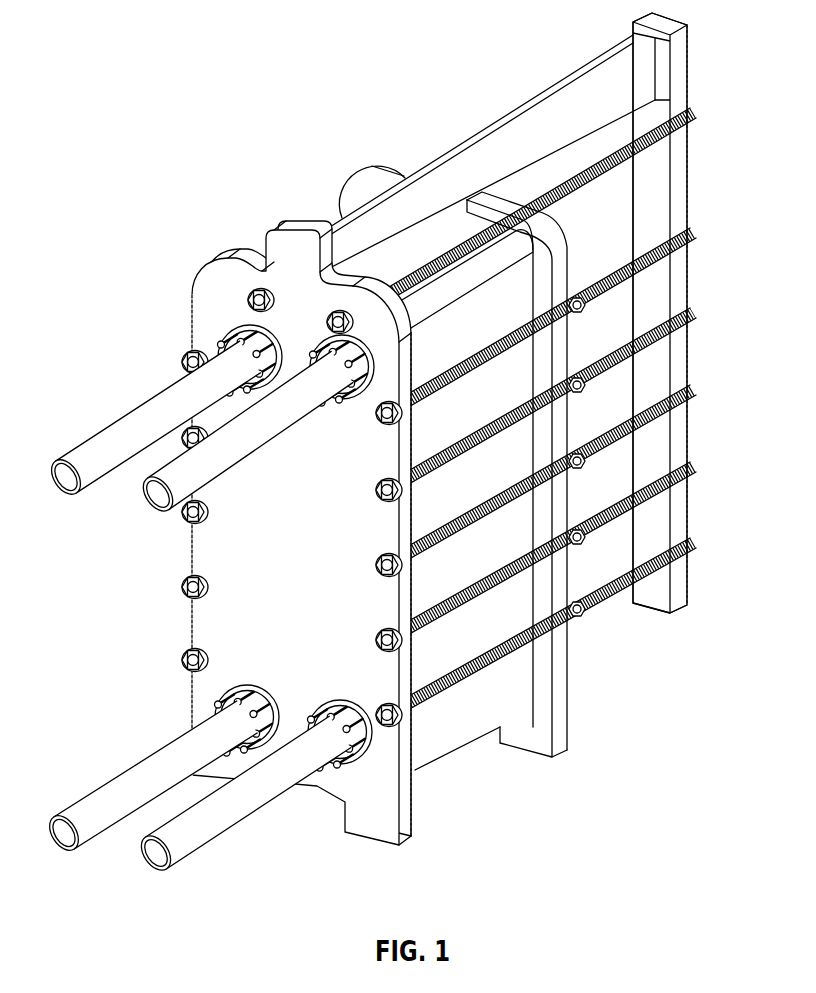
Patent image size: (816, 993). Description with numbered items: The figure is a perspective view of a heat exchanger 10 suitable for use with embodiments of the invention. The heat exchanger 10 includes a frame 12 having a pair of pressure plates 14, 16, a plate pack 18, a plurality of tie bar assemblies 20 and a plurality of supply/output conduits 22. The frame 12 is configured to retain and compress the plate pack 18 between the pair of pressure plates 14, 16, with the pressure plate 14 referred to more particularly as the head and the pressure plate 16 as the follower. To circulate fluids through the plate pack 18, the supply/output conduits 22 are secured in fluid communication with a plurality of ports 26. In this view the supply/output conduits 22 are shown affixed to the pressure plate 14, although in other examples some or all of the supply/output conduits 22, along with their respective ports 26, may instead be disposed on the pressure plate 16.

The heat exchanger 10 is at (124, 104).
The frame 12 is at (534, 84).
The pressure plate 14 is at (284, 226).
The pressure plate 16 is at (550, 232).
The plate pack 18 is at (515, 295).
The tie bar assemblies 20 is at (492, 344).
The supply/output conduits 22 is at (120, 420).
The ports 26 is at (276, 333).